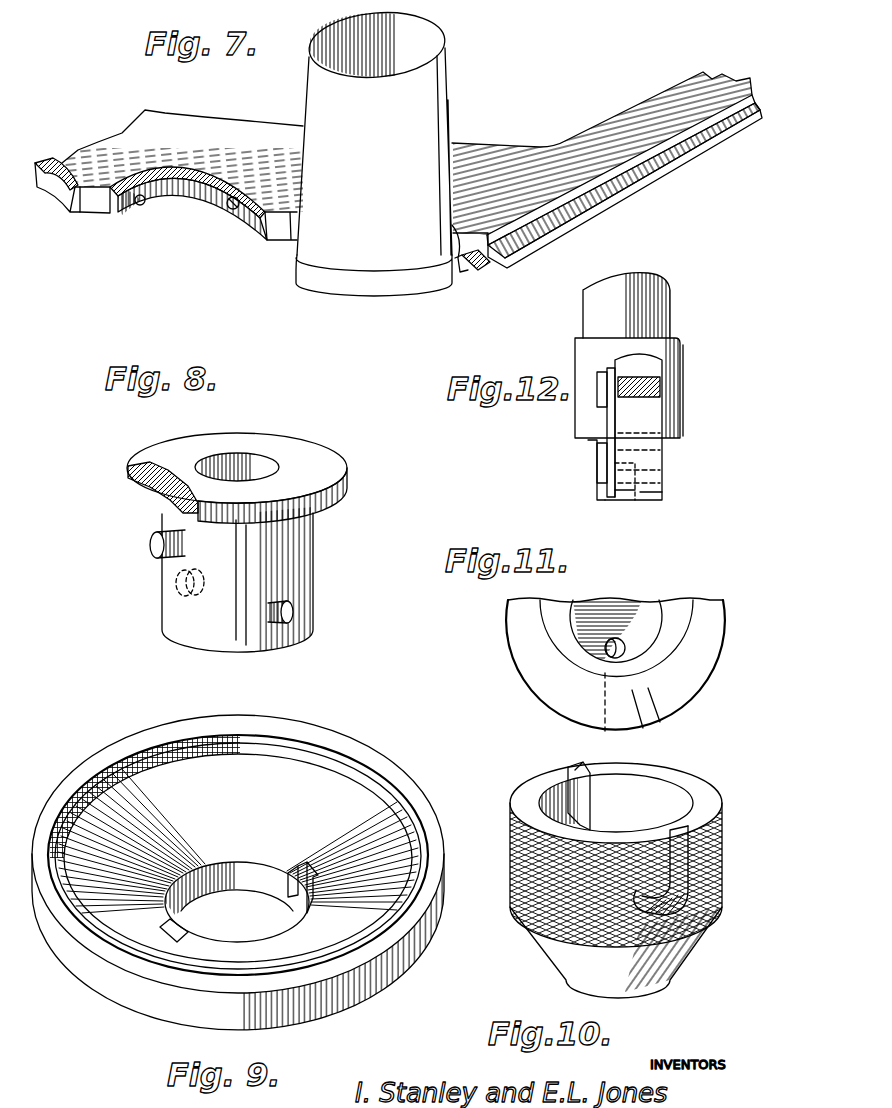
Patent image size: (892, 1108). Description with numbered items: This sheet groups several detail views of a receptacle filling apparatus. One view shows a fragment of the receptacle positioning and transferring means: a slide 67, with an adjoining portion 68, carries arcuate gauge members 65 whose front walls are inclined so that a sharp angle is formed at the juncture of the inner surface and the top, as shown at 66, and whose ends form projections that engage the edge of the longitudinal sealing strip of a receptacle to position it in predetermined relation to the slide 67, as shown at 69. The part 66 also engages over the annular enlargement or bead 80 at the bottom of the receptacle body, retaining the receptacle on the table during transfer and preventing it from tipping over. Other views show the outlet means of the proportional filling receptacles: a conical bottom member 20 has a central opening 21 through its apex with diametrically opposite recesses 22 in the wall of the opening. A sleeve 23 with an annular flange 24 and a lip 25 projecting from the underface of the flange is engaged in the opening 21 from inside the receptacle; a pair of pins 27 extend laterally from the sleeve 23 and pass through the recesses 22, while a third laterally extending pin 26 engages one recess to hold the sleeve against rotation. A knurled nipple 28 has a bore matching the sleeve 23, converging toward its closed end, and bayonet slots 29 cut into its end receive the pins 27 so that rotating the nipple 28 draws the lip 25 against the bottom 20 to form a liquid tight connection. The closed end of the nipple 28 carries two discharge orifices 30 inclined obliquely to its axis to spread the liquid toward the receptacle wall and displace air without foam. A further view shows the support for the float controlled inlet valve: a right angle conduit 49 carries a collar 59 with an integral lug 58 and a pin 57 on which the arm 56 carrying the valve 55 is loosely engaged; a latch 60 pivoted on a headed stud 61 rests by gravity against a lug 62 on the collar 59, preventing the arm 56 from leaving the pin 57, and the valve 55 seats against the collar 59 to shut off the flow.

In FIG. 9, the conical bottom member 20 is at (325, 797).
In FIG. 9, the central opening 21 is at (262, 876).
In FIG. 9, the recess 22 is at (290, 900).
In FIG. 8, the sleeve 23 is at (300, 555).
In FIG. 8, the annular flange 24 is at (322, 460).
In FIG. 8, the lip 25 is at (127, 488).
In FIG. 8, the pin 26 is at (151, 546).
In FIG. 8, the pin 27 is at (180, 592).
In FIG. 11, the nipple 28 is at (528, 646).
In FIG. 10, the nipple 28 is at (722, 862).
In FIG. 11, the bayonet slot 29 is at (652, 712).
In FIG. 10, the bayonet slot 29 is at (597, 820).
In FIG. 11, the discharge orifice 30 is at (620, 652).
In FIG. 12, the conduit 49 is at (650, 300).
In FIG. 12, the valve 55 is at (606, 448).
In FIG. 12, the arm 56 is at (625, 500).
In FIG. 12, the pin 57 is at (642, 500).
In FIG. 12, the lug 58 is at (650, 462).
In FIG. 12, the collar 59 is at (680, 356).
In FIG. 12, the latch 60 is at (610, 420).
In FIG. 12, the headed stud 61 is at (600, 392).
In FIG. 12, the collar lug 62 is at (600, 470).
In FIG. 7, the arcuate gauge member 65 is at (55, 187).
In FIG. 7, the sharp angle part 66 is at (209, 197).
In FIG. 7, the slide 67 is at (520, 160).
In FIG. 7, the ledge 68 is at (538, 245).
In FIG. 7, the end projection 69 is at (456, 270).
In FIG. 7, the bead 80 is at (320, 272).